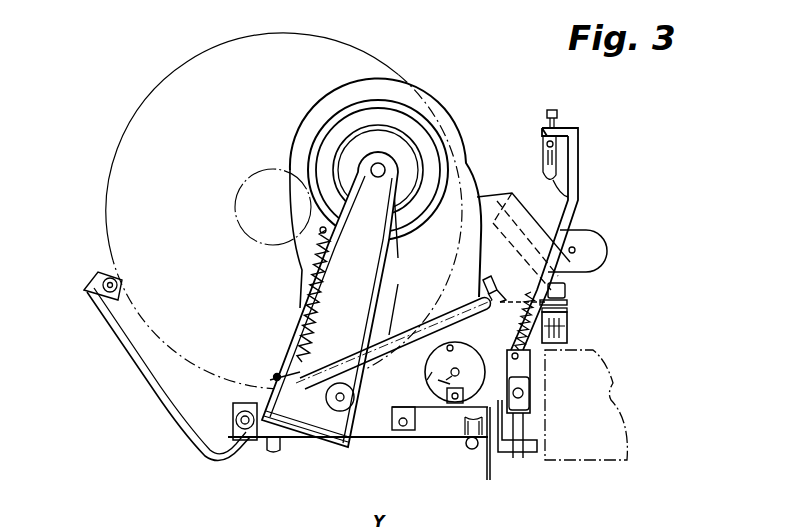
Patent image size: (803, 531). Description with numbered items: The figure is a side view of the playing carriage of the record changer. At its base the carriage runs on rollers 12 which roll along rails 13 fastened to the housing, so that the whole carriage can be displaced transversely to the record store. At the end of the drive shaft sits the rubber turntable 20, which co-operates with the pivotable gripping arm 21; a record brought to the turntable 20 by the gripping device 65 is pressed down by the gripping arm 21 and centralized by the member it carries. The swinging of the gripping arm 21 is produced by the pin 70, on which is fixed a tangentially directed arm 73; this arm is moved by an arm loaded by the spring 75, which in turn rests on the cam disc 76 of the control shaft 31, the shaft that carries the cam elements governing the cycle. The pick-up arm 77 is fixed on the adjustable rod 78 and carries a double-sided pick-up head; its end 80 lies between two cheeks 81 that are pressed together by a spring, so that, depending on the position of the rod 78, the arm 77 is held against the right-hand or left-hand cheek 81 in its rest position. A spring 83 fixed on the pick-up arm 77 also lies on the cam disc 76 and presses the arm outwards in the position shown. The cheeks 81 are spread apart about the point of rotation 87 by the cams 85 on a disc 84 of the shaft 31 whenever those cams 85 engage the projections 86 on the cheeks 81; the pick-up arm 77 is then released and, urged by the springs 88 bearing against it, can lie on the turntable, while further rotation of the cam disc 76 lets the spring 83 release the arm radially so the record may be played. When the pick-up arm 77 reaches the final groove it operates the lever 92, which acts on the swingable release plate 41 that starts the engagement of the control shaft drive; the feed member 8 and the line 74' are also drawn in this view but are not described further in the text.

The feed roller block 8 is at (563, 326).
The rollers 12 is at (466, 443).
The rails 13 is at (473, 449).
The turntable 20 is at (393, 107).
The gripping arm 21 is at (390, 180).
The control shaft 31 is at (449, 378).
The release plate 41 is at (567, 301).
The gripping device 65 is at (155, 393).
The pin 70 is at (337, 405).
The tangentially directed arm 73 is at (275, 372).
The pawl arm 74' is at (405, 254).
The spring 75 is at (330, 315).
The cam disc 76 is at (425, 373).
The pick-up arm 77 is at (571, 148).
The adjustable rod 78 is at (523, 393).
The end of the pick-up arm 80 is at (517, 448).
The cheeks 81 is at (493, 442).
The spring 83 is at (480, 300).
The disc 84 is at (429, 382).
The cams 85 is at (441, 380).
The projections 86 is at (466, 394).
The point of rotation 87 is at (395, 402).
The springs 88 is at (567, 311).
The lever 92 is at (505, 294).